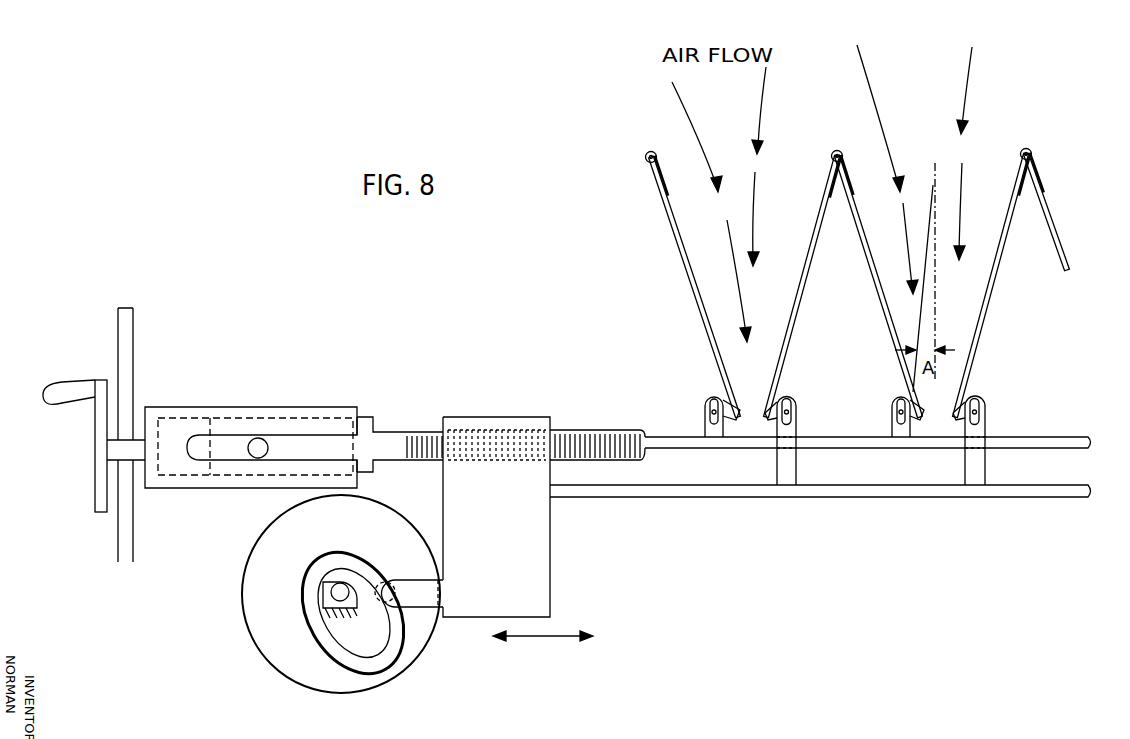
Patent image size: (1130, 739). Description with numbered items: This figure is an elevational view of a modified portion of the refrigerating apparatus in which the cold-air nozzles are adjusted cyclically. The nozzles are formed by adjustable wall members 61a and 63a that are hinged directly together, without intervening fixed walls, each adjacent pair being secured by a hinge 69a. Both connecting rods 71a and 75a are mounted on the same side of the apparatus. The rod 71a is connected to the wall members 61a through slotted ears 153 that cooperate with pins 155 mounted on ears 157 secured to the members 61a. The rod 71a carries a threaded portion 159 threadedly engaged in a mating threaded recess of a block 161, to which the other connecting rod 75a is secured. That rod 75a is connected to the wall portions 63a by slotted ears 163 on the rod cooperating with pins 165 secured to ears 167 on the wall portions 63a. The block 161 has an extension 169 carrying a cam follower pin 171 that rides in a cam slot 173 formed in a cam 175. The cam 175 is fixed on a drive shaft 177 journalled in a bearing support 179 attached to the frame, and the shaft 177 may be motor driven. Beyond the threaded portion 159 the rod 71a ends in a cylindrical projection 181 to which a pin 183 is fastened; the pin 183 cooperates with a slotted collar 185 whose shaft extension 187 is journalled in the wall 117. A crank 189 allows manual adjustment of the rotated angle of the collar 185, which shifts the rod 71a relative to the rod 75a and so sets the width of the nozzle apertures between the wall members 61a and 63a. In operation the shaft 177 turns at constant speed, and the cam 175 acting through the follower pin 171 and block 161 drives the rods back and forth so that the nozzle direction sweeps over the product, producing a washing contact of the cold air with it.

The wall 117 is at (134, 340).
The crank 189 is at (64, 380).
The shaft extension 187 is at (110, 458).
The slotted collar 185 is at (177, 407).
The pin 183 is at (268, 448).
The cylindrical projection 181 is at (364, 417).
The block 161 is at (486, 417).
The threaded portion 159 is at (566, 432).
The ears 157 is at (720, 398).
The pins 155 is at (710, 410).
The slotted ears 153 is at (705, 432).
The ears 167 is at (778, 402).
The pins 165 is at (794, 415).
The slotted ears 163 is at (785, 468).
The connecting rod 71a is at (1034, 437).
The connecting rod 75a is at (1034, 485).
The adjustable wall member 61a is at (690, 279).
The adjustable wall member 63a is at (802, 290).
The hinge 69a is at (837, 150).
The cam 175 is at (262, 544).
The cam follower pin 171 is at (363, 560).
The drive shaft 177 is at (336, 588).
The bearing support 179 is at (322, 598).
The cam slot 173 is at (312, 626).
The extension 169 is at (412, 580).